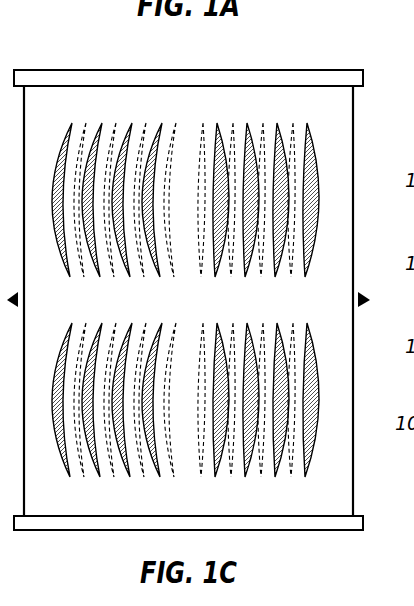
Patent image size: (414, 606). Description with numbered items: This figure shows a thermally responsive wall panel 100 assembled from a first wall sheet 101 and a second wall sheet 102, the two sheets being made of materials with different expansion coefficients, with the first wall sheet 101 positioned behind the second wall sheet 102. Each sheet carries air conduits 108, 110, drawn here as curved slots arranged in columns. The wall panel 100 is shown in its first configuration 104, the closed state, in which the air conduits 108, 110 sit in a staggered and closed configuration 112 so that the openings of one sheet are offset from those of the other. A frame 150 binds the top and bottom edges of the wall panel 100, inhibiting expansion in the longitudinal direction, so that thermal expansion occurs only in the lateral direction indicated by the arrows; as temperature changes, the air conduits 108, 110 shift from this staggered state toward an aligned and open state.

The thermally responsive wall panel 100 is at (214, 299).
The first wall sheet 101 is at (77, 102).
The second wall sheet 102 is at (344, 501).
The first configuration 104 is at (72, 510).
The air conduit 108 is at (288, 276).
The air conduit 110 is at (323, 123).
The staggered and closed configuration 112 is at (300, 228).
The frame 150 is at (110, 78).